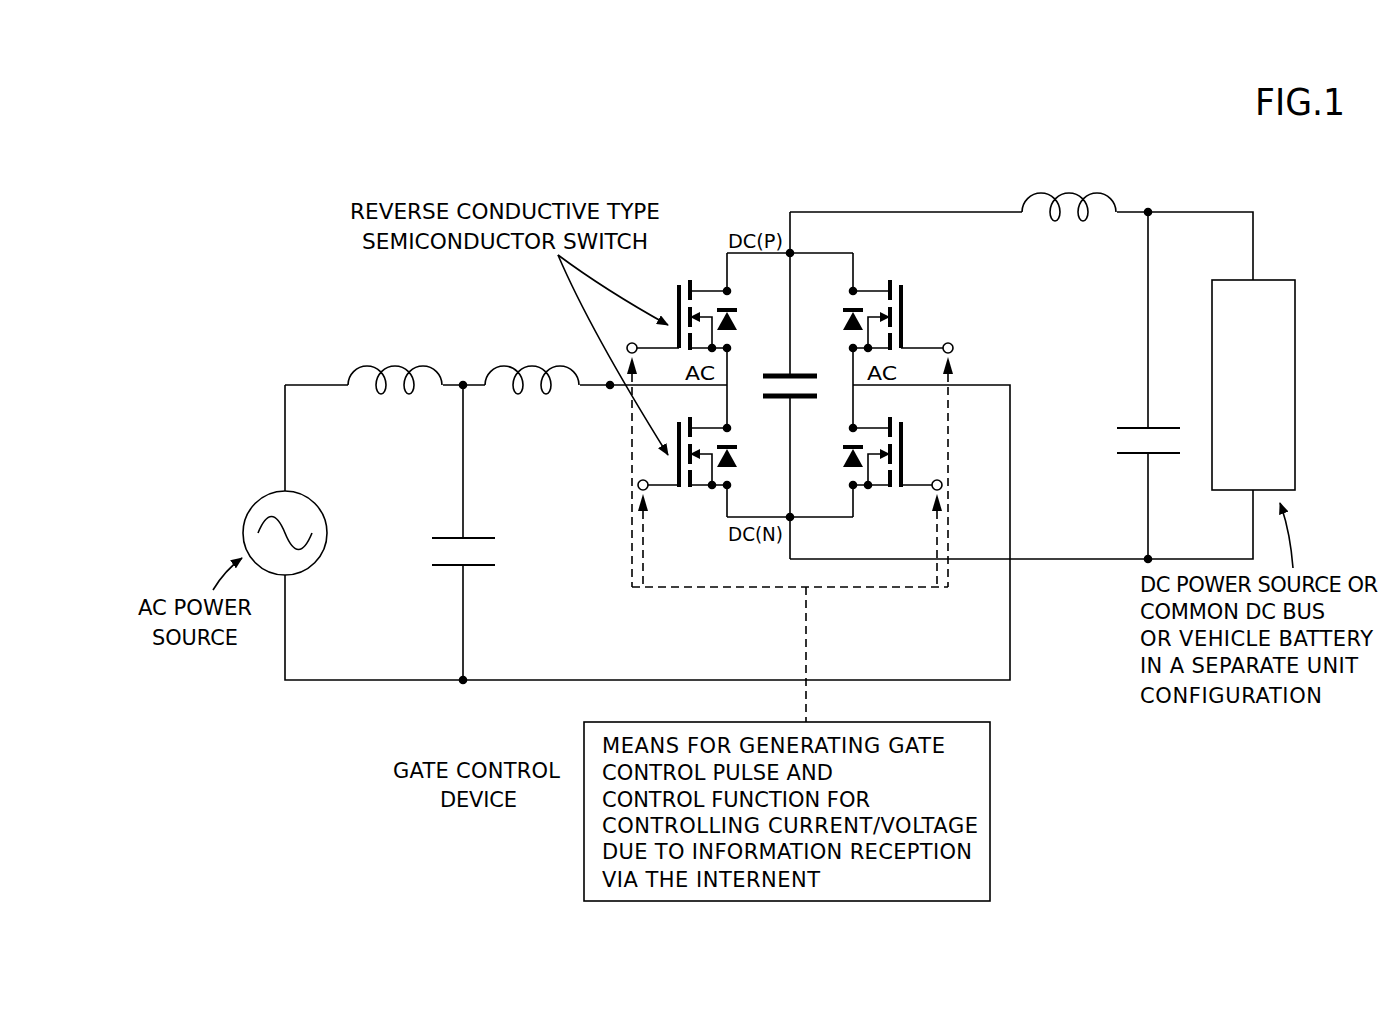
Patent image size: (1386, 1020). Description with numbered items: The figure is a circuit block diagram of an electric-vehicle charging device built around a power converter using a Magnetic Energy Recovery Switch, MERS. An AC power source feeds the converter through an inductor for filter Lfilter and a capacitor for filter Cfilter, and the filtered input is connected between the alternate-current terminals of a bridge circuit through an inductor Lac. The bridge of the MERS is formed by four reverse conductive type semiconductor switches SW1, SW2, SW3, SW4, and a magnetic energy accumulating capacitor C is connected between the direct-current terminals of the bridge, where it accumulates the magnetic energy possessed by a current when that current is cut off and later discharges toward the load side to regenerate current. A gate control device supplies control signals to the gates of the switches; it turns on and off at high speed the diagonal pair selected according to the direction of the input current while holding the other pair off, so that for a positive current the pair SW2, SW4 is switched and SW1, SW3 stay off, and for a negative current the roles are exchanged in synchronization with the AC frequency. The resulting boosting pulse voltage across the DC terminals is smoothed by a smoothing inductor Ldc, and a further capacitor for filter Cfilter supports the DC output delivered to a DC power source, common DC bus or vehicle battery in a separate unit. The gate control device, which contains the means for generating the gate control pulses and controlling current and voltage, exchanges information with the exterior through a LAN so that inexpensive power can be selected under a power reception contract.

The reverse conductive type semiconductor switch SW1 is at (681, 431).
The reverse conductive type semiconductor switch SW2 is at (687, 502).
The reverse conductive type semiconductor switch SW3 is at (892, 502).
The reverse conductive type semiconductor switch SW4 is at (900, 431).
The magnetic energy accumulating capacitor C is at (687, 180).
The inductor for filter Lfilter is at (363, 360).
The inductor Lac is at (505, 358).
The smoothing inductor Ldc is at (1032, 190).
The capacitor for filter Cfilter is at (786, 480).
The Magnetic Energy Recovery Switch MERS is at (873, 207).
The element LAN is at (993, 783).